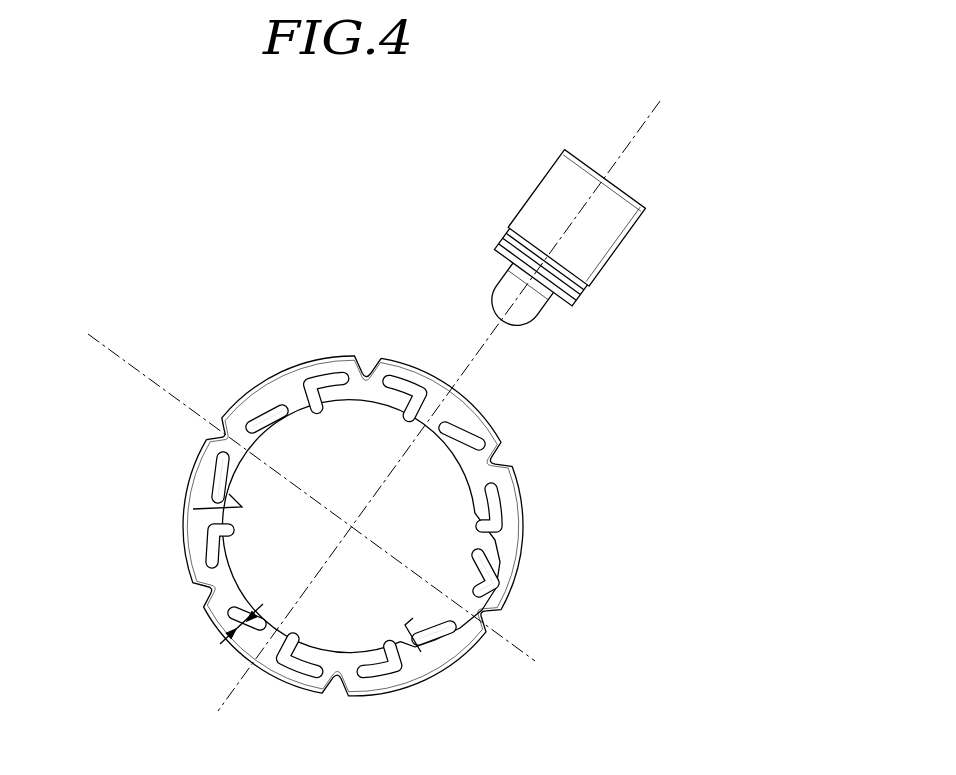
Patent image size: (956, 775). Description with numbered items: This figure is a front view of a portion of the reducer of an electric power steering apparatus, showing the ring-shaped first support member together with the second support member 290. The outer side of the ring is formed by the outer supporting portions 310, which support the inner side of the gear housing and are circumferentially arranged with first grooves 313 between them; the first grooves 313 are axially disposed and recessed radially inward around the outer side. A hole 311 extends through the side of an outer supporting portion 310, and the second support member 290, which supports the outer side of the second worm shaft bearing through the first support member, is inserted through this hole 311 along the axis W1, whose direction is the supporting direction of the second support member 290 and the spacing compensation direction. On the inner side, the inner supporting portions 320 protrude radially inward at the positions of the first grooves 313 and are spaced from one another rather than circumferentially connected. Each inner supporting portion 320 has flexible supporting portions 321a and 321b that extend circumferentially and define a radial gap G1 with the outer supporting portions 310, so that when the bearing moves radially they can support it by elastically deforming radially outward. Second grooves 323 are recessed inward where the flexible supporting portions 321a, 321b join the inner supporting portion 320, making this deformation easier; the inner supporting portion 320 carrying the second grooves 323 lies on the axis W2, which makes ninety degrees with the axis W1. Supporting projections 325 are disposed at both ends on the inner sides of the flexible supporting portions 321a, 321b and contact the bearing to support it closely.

The second support member 290 is at (514, 183).
The outer supporting portions 310 is at (291, 378).
The hole 311 is at (481, 421).
The first grooves 313 is at (499, 461).
The inner supporting portions 320 is at (366, 375).
The flexible supporting portion 321a is at (477, 568).
The flexible supporting portion 321b is at (428, 637).
The second grooves 323 is at (224, 430).
The supporting projections 325 is at (408, 630).
The radial gap G1 is at (225, 637).
The axis W1 is at (449, 394).
The axis W2 is at (294, 485).